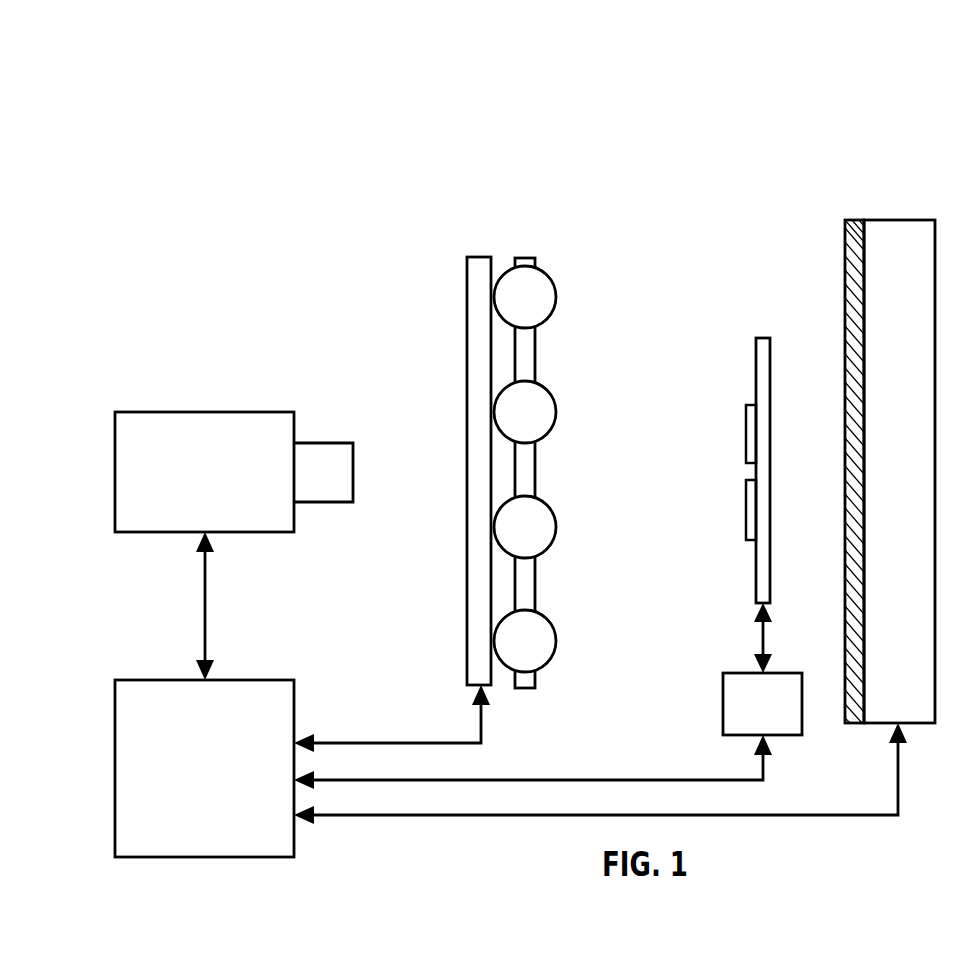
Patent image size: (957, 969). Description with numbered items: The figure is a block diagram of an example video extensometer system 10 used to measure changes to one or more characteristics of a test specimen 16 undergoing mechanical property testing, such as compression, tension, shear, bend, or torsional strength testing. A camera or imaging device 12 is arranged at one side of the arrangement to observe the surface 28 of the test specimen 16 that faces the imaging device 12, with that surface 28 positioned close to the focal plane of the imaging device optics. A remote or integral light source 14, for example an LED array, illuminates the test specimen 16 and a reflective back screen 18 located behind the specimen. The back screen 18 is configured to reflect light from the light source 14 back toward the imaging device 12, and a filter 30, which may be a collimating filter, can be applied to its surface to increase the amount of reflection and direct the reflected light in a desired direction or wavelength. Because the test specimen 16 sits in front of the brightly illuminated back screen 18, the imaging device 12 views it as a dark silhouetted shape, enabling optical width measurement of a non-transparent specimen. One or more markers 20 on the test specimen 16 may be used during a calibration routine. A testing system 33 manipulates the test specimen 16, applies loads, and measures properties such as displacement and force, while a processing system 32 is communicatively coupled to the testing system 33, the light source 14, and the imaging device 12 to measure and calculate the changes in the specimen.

The extensometer system 10 is at (262, 188).
The imaging device 12 is at (237, 412).
The light source 14 is at (467, 257).
The test specimen 16 is at (771, 366).
The back screen 18 is at (913, 483).
The markers 20 is at (746, 405).
The surface 28 is at (746, 343).
The filter 30 is at (845, 220).
The processing system 32 is at (163, 680).
The testing system 33 is at (743, 673).